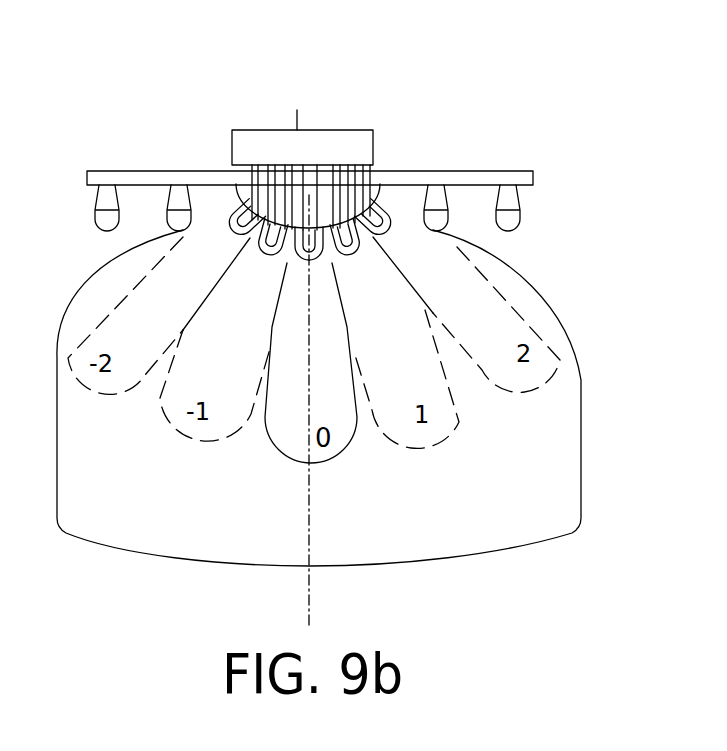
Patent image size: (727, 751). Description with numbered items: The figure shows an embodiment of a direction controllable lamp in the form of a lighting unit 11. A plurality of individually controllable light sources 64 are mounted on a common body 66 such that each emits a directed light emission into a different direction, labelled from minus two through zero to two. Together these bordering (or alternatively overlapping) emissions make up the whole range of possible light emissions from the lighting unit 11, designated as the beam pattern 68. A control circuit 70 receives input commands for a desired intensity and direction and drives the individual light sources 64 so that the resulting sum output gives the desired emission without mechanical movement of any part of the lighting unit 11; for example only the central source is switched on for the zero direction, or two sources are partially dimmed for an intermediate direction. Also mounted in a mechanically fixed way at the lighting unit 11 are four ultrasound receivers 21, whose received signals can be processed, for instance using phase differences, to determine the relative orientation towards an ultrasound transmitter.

The lighting unit 11 is at (209, 174).
The ultrasound receivers 21 is at (95, 212).
The light sources 64 is at (357, 263).
The common body 66 is at (327, 194).
The beam pattern 68 is at (469, 518).
The control circuit 70 is at (373, 144).